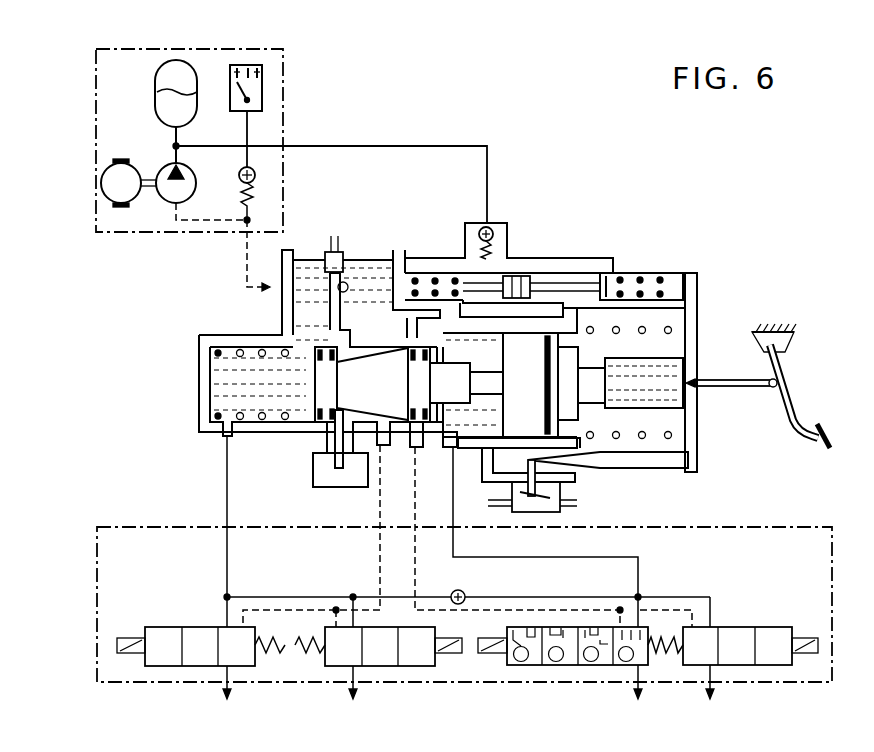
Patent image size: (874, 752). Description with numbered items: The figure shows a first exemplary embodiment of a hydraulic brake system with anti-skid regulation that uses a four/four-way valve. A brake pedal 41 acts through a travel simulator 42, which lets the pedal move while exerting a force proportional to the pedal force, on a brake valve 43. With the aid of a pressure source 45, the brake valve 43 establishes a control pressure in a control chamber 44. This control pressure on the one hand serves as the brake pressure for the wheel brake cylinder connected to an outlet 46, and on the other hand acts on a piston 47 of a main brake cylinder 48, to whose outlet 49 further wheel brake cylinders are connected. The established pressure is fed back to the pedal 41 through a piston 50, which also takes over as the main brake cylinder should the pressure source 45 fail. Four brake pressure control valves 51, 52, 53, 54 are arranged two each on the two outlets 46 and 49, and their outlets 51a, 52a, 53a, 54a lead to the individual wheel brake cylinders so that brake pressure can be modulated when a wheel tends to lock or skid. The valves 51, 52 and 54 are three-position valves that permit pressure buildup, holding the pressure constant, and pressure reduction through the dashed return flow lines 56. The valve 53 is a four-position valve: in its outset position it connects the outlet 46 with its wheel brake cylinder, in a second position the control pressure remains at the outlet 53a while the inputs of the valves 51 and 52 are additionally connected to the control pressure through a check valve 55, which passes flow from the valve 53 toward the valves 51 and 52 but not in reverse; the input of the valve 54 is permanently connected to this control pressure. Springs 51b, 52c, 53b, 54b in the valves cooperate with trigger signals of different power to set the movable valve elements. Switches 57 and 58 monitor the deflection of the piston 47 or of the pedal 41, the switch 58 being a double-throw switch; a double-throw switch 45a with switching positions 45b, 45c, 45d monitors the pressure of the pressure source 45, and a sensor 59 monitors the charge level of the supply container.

The brake pedal 41 is at (790, 388).
The travel simulator 42 is at (663, 274).
The brake valve 43 is at (535, 282).
The control chamber 44 is at (467, 352).
The pressure source 45 is at (112, 92).
The double-throw switch 45a is at (262, 97).
The switching position 45b is at (237, 70).
The switching position 45c is at (249, 70).
The switching position 45d is at (259, 74).
The outlet 46 is at (453, 449).
The piston 47 is at (360, 394).
The main brake cylinder 48 is at (227, 383).
The outlet 49 is at (222, 434).
The piston 50 is at (525, 355).
The brake pressure control valve 51 is at (207, 658).
The outlet 51a is at (231, 697).
The spring 51b is at (271, 646).
The brake pressure control valve 52 is at (380, 658).
The outlet 52a is at (350, 697).
The spring 52c is at (312, 645).
The four-position valve 53 is at (555, 660).
The outlet 53a is at (634, 697).
The spring 53b is at (656, 644).
The brake pressure control valve 54 is at (777, 660).
The outlet 54a is at (706, 697).
The spring 54b is at (682, 645).
The check valve 55 is at (470, 586).
The return flow lines 56 is at (414, 552).
The switch 57 is at (337, 480).
The switch 58 is at (550, 506).
The sensor 59 is at (339, 252).